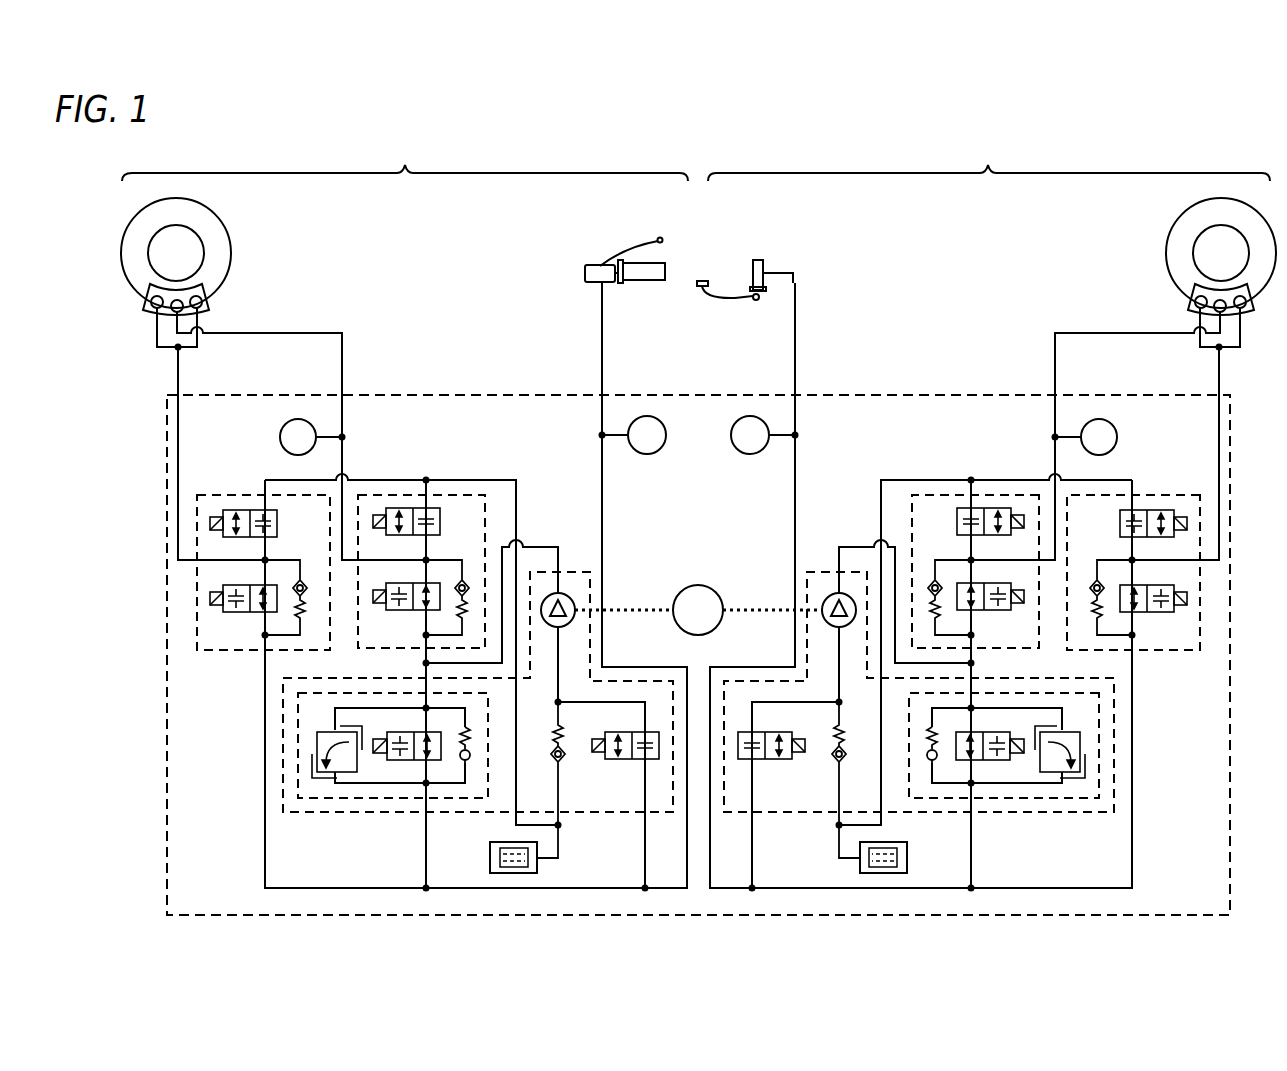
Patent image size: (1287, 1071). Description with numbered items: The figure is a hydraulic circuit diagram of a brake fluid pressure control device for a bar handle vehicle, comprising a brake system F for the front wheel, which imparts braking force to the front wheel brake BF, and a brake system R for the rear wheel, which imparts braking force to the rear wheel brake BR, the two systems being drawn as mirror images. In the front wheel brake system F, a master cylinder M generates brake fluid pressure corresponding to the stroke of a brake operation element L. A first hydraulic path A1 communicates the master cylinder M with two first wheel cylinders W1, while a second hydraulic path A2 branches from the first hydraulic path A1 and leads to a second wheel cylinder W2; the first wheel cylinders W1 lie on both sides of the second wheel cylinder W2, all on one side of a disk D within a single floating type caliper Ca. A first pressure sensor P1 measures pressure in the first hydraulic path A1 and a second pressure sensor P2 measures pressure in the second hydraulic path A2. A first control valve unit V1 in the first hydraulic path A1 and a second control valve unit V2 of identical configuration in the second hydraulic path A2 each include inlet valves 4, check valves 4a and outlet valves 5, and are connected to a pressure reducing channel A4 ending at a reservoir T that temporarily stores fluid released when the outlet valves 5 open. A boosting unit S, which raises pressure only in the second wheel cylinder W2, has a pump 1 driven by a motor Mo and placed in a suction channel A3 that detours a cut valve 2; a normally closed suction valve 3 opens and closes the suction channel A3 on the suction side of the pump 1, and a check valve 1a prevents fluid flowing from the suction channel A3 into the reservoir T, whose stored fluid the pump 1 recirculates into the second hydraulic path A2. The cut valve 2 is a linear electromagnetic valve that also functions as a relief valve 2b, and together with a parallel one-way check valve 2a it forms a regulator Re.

The brake system for a front wheel F is at (405, 160).
The brake system for a rear wheel R is at (989, 160).
The front wheel brake BF is at (238, 214).
The rear wheel brake BR is at (1158, 215).
The disk D is at (228, 239).
The floating type caliper Ca is at (209, 312).
The first wheel cylinder W1 is at (204, 298).
The second wheel cylinder W2 is at (205, 282).
The first hydraulic path A1 is at (181, 380).
The second hydraulic path A2 is at (343, 358).
The suction channel A3 is at (540, 545).
The pressure reducing channel A4 is at (489, 480).
The master cylinder M is at (591, 282).
The brake operation element L is at (640, 263).
The first pressure sensor P1 is at (698, 435).
The second pressure sensor P2 is at (698, 437).
The motor Mo is at (698, 610).
The pump 1 is at (563, 627).
The check valve 1a is at (565, 738).
The suction valve 3 is at (624, 760).
The first control valve unit V1 is at (232, 492).
The second control valve unit V2 is at (448, 492).
The outlet valve 5 is at (277, 523).
The inlet valve 4 is at (233, 611).
The check valve 4a is at (305, 580).
The boosting unit S is at (343, 818).
The regulator Re is at (378, 800).
The cut valve 2 is at (407, 761).
The check valve 2a is at (470, 765).
The relief valve 2b is at (320, 775).
The reservoir T is at (490, 860).